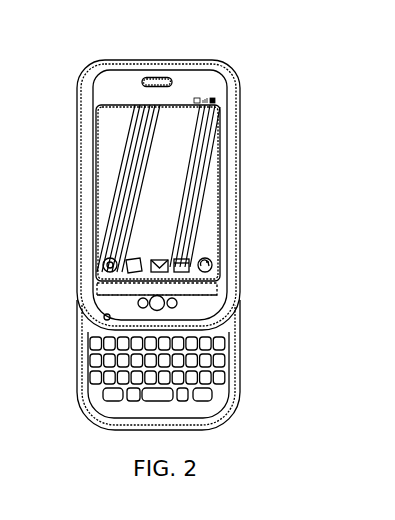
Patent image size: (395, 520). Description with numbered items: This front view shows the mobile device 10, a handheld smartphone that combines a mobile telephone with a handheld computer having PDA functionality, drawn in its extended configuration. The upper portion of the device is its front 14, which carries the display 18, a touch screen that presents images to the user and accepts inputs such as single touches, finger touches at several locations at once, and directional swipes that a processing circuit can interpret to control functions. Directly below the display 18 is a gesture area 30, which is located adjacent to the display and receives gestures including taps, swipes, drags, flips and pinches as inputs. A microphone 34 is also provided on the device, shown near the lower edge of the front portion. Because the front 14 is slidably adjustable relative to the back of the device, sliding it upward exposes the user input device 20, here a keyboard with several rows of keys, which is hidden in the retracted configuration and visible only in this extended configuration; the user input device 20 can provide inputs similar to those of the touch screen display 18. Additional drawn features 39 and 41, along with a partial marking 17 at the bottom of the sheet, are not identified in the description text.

The mobile device 10 is at (178, 47).
The front 14 is at (196, 90).
The display 18 is at (205, 184).
The user input device 20 is at (221, 363).
The gesture area 30 is at (212, 291).
The microphone 34 is at (102, 320).
The buttons 39 is at (179, 303).
The gesture area boundary 41 is at (147, 293).
The housing 17 is at (167, 518).